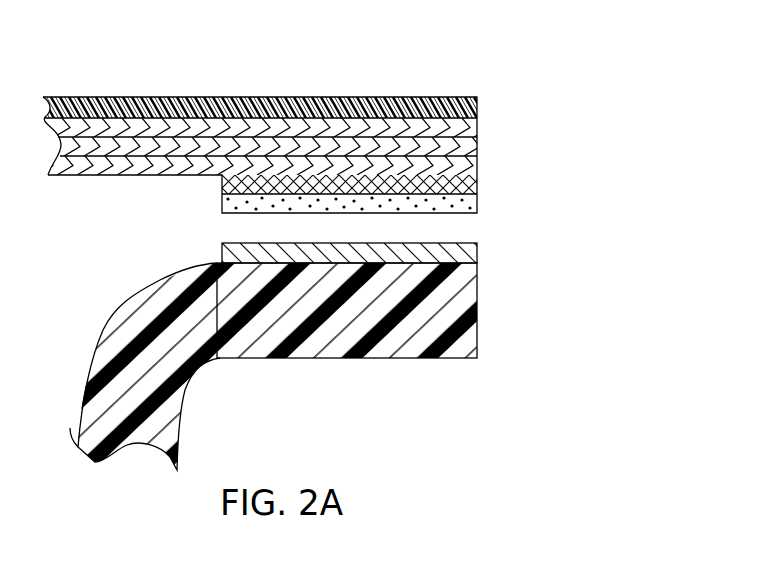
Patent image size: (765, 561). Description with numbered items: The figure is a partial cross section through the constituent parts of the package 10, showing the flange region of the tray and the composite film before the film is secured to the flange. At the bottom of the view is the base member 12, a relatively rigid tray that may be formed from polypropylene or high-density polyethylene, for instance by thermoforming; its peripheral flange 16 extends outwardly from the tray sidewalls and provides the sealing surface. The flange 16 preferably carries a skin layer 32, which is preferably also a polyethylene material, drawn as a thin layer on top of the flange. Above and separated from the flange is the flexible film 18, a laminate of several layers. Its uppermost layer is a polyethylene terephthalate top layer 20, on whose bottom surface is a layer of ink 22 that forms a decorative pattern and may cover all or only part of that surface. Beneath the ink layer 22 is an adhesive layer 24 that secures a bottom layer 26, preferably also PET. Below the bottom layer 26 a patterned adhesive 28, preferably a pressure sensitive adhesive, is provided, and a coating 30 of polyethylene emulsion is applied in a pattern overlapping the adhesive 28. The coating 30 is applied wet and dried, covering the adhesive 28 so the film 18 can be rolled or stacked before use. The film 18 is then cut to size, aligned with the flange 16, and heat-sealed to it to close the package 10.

The package 10 is at (595, 92).
The base member 12 is at (178, 423).
The peripheral flange 16 is at (474, 297).
The flexible film 18 is at (405, 74).
The PET top layer 20 is at (478, 100).
The ink layer 22 is at (478, 119).
The adhesive layer 24 is at (478, 140).
The bottom layer 26 is at (478, 163).
The patterned adhesive 28 is at (222, 182).
The coating 30 is at (225, 203).
The skin layer 32 is at (478, 250).